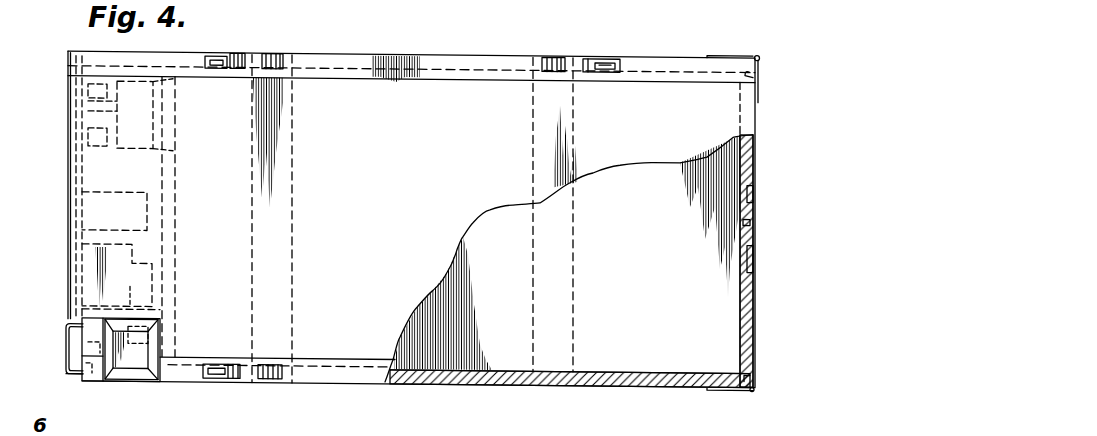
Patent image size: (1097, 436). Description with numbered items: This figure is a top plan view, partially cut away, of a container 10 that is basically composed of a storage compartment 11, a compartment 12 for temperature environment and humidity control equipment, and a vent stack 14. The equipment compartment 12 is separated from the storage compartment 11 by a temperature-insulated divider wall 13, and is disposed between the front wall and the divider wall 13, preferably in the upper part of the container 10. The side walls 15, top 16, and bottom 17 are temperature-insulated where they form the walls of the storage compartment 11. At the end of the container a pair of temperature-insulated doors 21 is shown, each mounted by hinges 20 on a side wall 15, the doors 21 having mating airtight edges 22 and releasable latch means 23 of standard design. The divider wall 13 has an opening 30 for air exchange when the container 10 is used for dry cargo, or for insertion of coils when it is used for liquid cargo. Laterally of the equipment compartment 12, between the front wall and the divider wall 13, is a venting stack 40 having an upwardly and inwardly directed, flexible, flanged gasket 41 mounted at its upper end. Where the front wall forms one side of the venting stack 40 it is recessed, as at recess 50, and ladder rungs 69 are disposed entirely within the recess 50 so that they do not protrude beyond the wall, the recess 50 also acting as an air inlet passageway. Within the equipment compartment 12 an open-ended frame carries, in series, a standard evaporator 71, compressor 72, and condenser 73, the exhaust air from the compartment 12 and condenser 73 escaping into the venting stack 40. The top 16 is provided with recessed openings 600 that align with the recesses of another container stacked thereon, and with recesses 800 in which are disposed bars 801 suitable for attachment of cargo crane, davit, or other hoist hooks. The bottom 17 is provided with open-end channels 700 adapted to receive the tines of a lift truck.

The container 10 is at (441, 118).
The storage compartment 11 is at (577, 214).
The compartment for temperature environment and humidity control equipment 12 is at (115, 176).
The temperature-insulated divider wall 13 is at (177, 188).
The vent stack 14 is at (125, 381).
The side walls 15 is at (418, 52).
The top 16 is at (503, 232).
The bottom 17 is at (645, 366).
The hinges 20 is at (752, 50).
The temperature-insulated doors 21 is at (756, 150).
The mating airtight edges 22 is at (758, 72).
The releasable latch means 23 is at (750, 185).
The opening 30 is at (172, 147).
The venting stack 40 is at (137, 357).
The flexible flanged gasket 41 is at (160, 365).
The recess 50 is at (69, 334).
The ladder rungs 69 is at (67, 376).
The evaporator 71 is at (90, 144).
The compressor 72 is at (88, 211).
The condenser 73 is at (80, 272).
The recessed openings 600 is at (620, 56).
The open-end channels 700 is at (292, 261).
The recesses 800 is at (270, 52).
The bars 801 is at (290, 58).